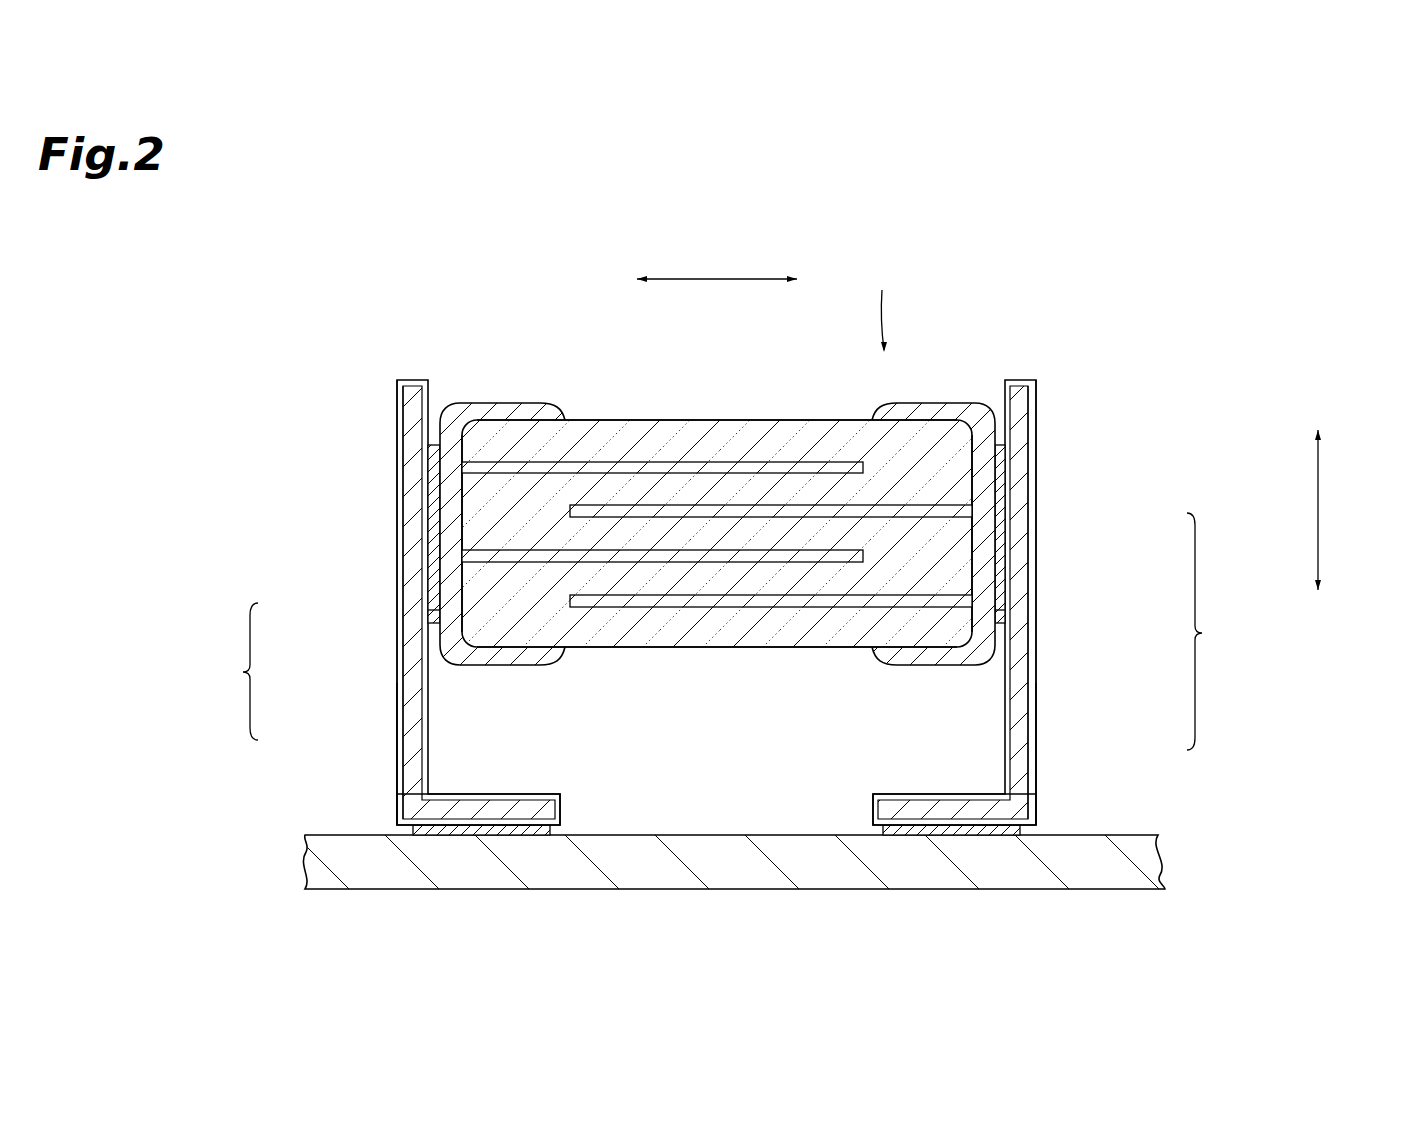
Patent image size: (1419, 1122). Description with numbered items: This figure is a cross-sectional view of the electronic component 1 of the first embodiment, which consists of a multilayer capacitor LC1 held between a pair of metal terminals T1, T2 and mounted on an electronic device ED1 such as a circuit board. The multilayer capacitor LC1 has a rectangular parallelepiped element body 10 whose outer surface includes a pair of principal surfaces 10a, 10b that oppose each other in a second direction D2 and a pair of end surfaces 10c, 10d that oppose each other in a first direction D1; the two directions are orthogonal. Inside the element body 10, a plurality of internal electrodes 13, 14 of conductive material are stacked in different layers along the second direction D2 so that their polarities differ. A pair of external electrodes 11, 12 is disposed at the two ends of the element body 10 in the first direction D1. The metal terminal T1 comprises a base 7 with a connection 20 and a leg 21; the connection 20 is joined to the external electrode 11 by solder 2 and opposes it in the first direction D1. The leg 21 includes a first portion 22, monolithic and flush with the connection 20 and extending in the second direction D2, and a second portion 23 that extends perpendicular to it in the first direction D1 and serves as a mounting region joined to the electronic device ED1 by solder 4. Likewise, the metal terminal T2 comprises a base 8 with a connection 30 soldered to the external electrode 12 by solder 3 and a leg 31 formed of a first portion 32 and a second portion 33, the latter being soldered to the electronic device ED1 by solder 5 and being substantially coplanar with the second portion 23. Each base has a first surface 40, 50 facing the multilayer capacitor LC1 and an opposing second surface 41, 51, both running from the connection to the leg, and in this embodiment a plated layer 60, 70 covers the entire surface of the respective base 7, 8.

The electronic component 1 is at (328, 266).
The solder 2 is at (440, 410).
The solder 3 is at (1005, 420).
The solder 4 is at (550, 830).
The solder 5 is at (880, 830).
The base 7 is at (397, 460).
The base 8 is at (1020, 470).
The element body 10 is at (717, 525).
The principal surface 10a is at (672, 420).
The principal surface 10b is at (628, 648).
The end surface 10c is at (462, 507).
The end surface 10d is at (972, 462).
The external electrode 11 is at (497, 410).
The external electrode 12 is at (912, 410).
The internal electrode 13 is at (548, 555).
The internal electrode 14 is at (797, 600).
The connection 20 is at (409, 605).
The leg 21 is at (409, 756).
The first portion 22 is at (397, 697).
The second portion 23 is at (415, 830).
The connection 30 is at (1026, 605).
The leg 31 is at (1026, 756).
The first portion 32 is at (1037, 702).
The second portion 33 is at (1020, 830).
The first surface 40 is at (372, 557).
The second surface 41 is at (430, 612).
The first surface 50 is at (1052, 559).
The second surface 51 is at (1033, 632).
The plated layer 60 is at (397, 530).
The plated layer 70 is at (1037, 507).
The first direction D1 is at (703, 279).
The second direction D2 is at (1318, 523).
The multilayer capacitor LC1 is at (883, 306).
The metal terminal T1 is at (234, 671).
The metal terminal T2 is at (1211, 631).
The electronic device ED1 is at (1147, 860).